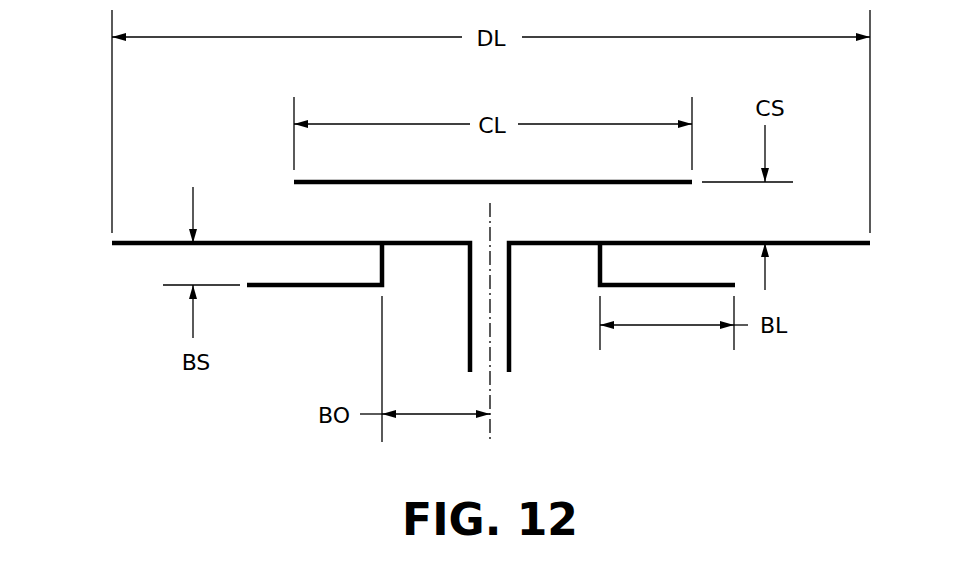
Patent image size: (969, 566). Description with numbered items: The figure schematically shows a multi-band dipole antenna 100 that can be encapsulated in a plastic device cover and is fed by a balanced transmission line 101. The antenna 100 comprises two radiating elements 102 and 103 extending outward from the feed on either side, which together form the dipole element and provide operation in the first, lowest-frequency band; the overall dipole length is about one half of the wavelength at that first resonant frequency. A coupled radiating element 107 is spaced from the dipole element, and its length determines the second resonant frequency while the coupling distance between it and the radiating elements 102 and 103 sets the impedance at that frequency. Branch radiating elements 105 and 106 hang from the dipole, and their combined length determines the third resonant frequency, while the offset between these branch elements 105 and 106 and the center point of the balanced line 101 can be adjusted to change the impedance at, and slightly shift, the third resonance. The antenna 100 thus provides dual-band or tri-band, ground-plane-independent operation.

The multi-band dipole antenna 100 is at (80, 142).
The balanced transmission line 101 is at (503, 378).
The radiating element 102 is at (135, 246).
The radiating element 103 is at (830, 246).
The branch radiating element 105 is at (263, 288).
The branch radiating element 106 is at (598, 277).
The coupled radiating element 107 is at (470, 181).